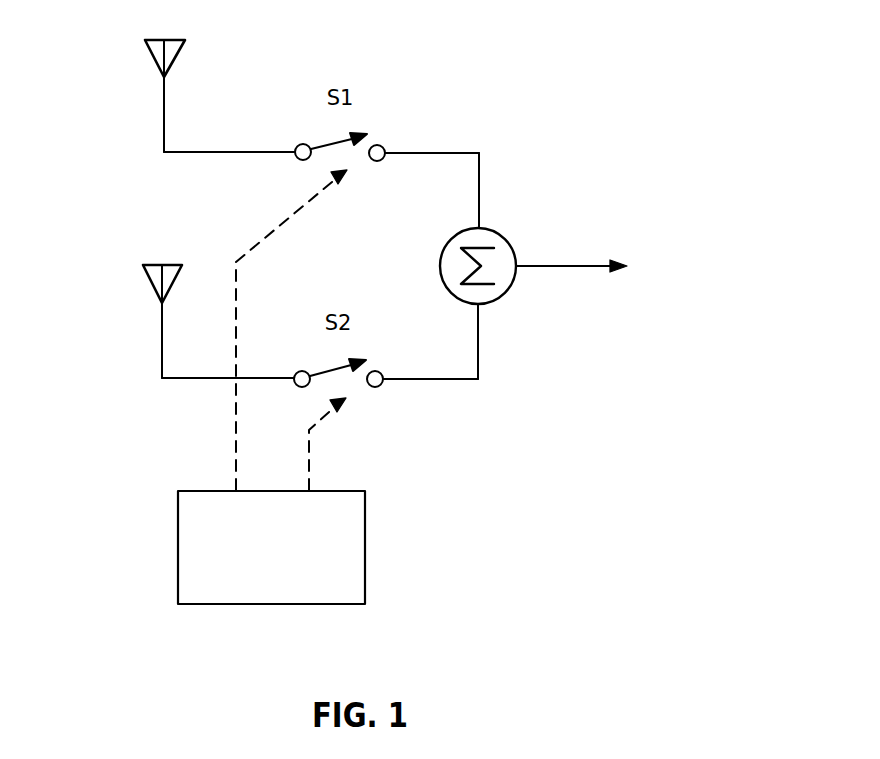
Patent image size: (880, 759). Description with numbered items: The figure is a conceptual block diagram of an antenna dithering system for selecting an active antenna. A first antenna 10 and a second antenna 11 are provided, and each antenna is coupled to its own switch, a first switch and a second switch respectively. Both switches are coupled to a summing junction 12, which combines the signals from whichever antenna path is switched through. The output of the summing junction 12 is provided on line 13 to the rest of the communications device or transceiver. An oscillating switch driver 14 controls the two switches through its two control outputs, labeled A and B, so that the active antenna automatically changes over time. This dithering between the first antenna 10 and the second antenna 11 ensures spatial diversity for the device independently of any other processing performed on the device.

The first antenna 10 is at (164, 118).
The second antenna 11 is at (162, 365).
The summing junction 12 is at (492, 228).
The line 13 is at (550, 265).
The oscillating switch driver 14 is at (178, 570).